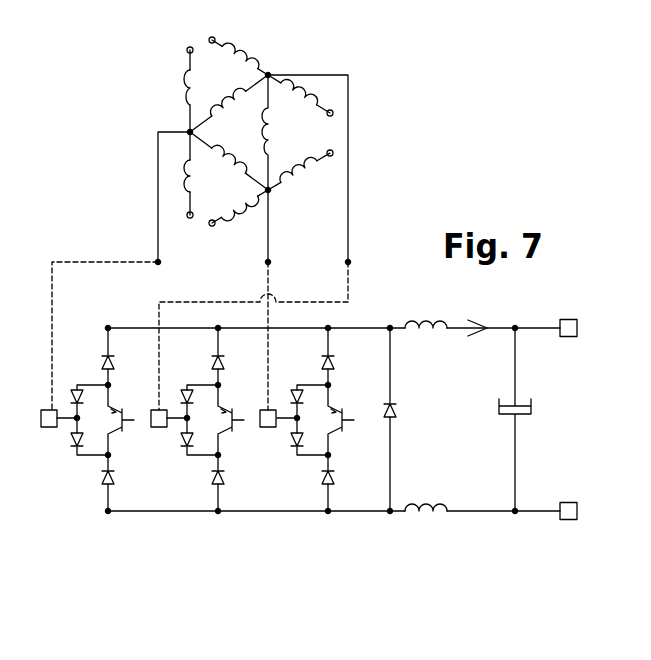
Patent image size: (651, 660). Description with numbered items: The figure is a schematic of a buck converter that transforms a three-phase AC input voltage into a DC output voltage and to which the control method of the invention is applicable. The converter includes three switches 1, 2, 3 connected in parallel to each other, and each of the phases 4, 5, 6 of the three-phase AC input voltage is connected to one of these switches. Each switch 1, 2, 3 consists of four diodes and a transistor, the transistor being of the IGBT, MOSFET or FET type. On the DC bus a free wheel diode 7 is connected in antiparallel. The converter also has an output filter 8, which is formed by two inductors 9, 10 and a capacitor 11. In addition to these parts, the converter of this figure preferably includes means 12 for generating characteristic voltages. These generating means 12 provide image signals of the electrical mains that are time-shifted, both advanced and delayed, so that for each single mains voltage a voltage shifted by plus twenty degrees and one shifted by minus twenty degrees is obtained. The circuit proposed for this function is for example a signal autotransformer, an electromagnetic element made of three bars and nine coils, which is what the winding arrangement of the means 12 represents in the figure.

The switch 1 is at (108, 510).
The switch 2 is at (217, 494).
The switch 3 is at (327, 509).
The phase 4 is at (47, 427).
The phase 5 is at (159, 427).
The phase 6 is at (268, 427).
The free wheel diode 7 is at (396, 412).
The output filter 8 is at (460, 409).
The inductor 9 is at (423, 318).
The inductor 10 is at (428, 498).
The capacitor 11 is at (501, 419).
The means for generating characteristic voltages 12 is at (142, 38).